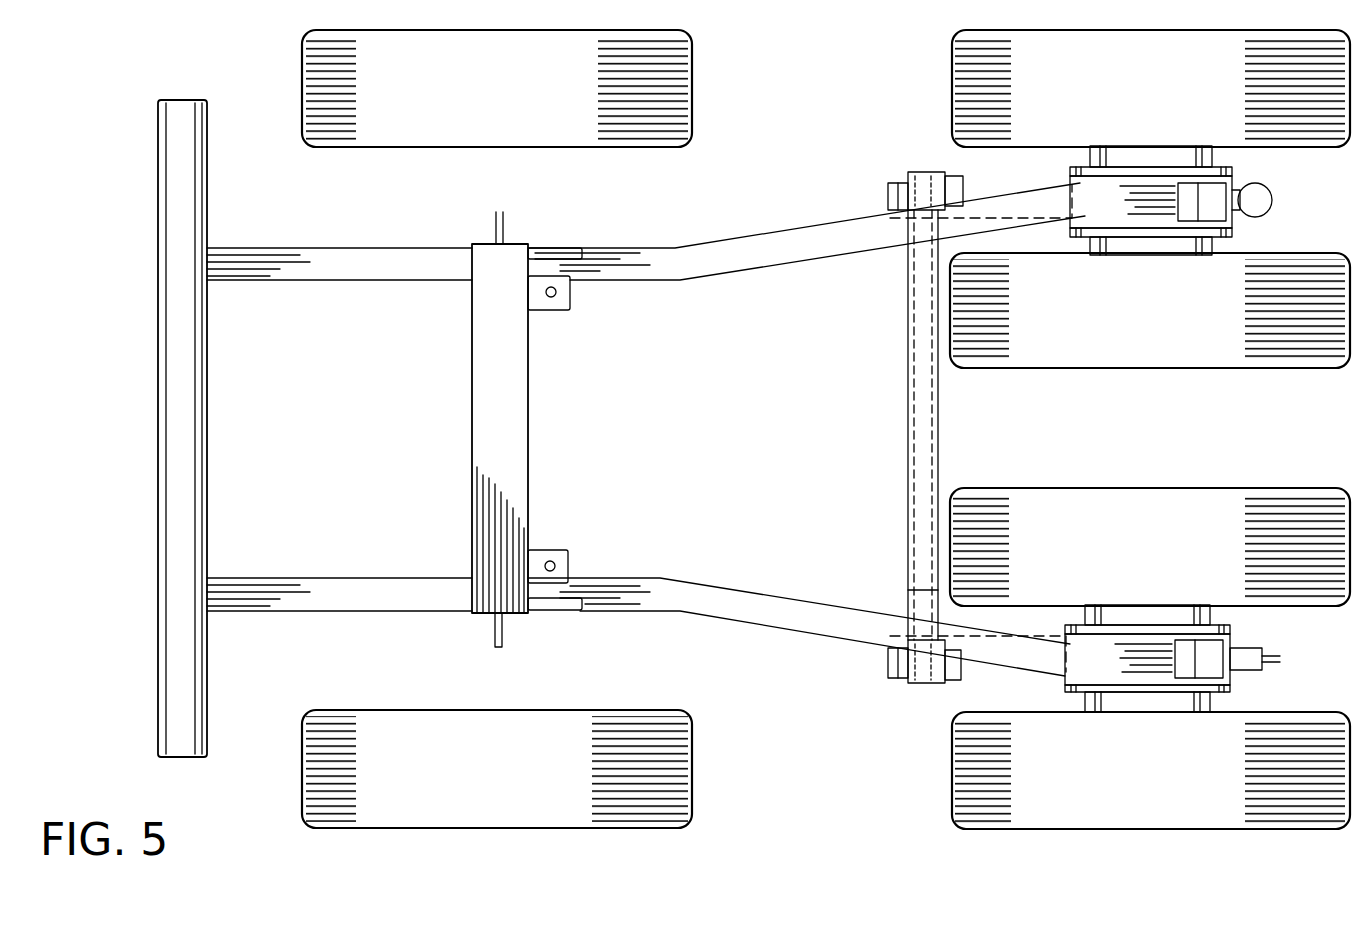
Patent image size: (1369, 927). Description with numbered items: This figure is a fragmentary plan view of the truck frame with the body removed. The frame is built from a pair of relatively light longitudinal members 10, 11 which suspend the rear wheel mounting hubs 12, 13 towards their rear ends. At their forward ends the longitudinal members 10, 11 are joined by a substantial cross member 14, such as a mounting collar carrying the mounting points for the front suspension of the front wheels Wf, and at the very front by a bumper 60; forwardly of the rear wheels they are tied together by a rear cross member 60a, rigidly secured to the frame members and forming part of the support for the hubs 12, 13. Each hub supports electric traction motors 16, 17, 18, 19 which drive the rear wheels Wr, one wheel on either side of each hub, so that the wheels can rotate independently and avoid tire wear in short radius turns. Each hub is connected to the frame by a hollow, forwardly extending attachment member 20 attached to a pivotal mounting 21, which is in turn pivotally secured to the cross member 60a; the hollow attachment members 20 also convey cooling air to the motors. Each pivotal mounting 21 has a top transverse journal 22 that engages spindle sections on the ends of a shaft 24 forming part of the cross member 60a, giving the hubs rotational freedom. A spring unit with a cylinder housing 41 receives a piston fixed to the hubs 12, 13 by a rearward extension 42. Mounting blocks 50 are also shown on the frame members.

The longitudinal member 10 is at (740, 608).
The longitudinal member 11 is at (640, 262).
The rear wheel mounting hub 12 is at (1237, 620).
The rear wheel mounting hub 13 is at (1225, 235).
The cross member 14 is at (483, 447).
The electric traction motor 16 is at (1100, 715).
The electric traction motor 17 is at (1130, 608).
The electric traction motor 18 is at (1125, 250).
The electric traction motor 19 is at (1128, 152).
The attachment member 20 is at (993, 185).
The pivotal mounting 21 is at (886, 178).
The top transverse journal 22 is at (915, 172).
The shaft 24 is at (905, 505).
The cylinder housing 41 is at (1270, 202).
The rearward extension 42 is at (1262, 655).
The mounting block 50 is at (568, 250).
The bumper 60 is at (190, 194).
The cross member 60a is at (905, 452).
The front wheel Wf is at (680, 95).
The rear wheel Wr is at (975, 60).